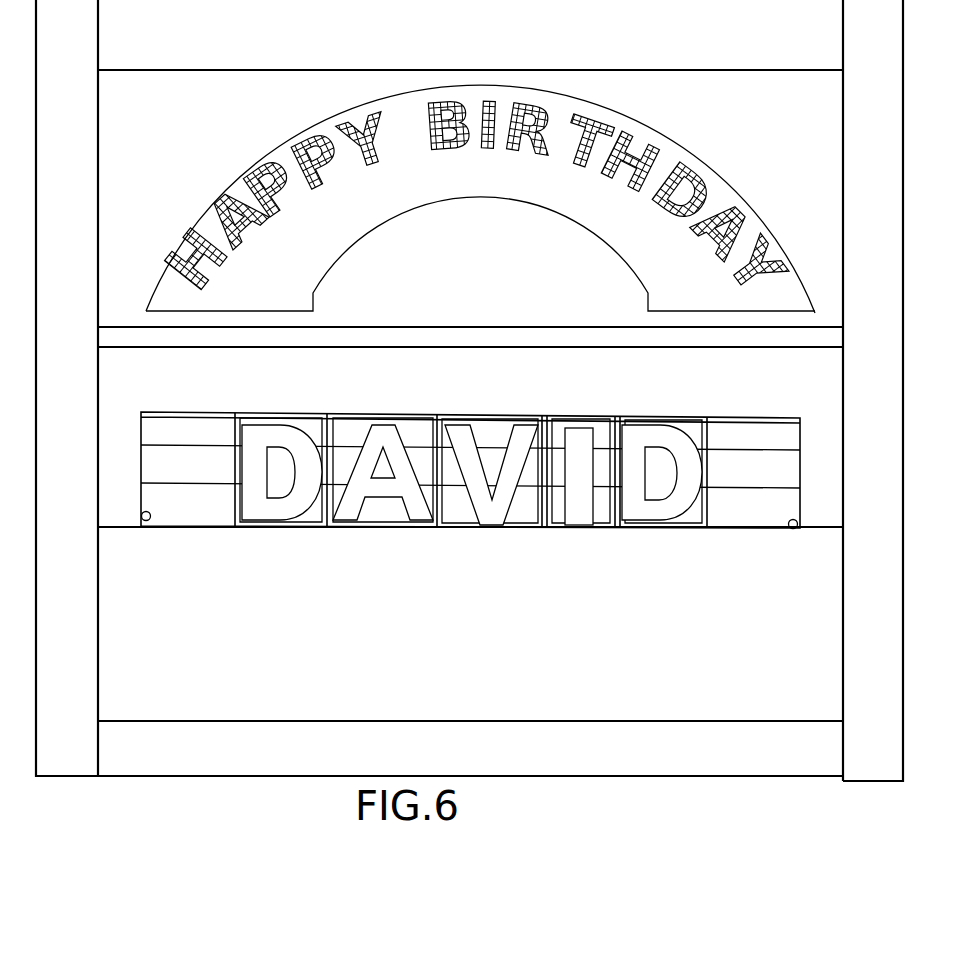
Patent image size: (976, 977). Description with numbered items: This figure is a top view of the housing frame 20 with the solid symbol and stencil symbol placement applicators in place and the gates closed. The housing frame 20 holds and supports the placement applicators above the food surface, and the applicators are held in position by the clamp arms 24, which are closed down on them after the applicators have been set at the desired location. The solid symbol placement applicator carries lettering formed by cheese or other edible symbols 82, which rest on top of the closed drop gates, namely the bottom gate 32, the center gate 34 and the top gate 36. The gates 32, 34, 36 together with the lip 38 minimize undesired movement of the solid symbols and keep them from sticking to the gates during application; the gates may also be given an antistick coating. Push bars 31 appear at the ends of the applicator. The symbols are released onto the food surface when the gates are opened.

The housing frame 20 is at (593, 757).
The clamp arm 24 is at (75, 737).
The push bar 31 is at (146, 521).
The bottom gate 32 is at (180, 510).
The center gate 34 is at (210, 467).
The top gate 36 is at (745, 435).
The lip 38 is at (437, 510).
The edible symbol 82 is at (297, 508).